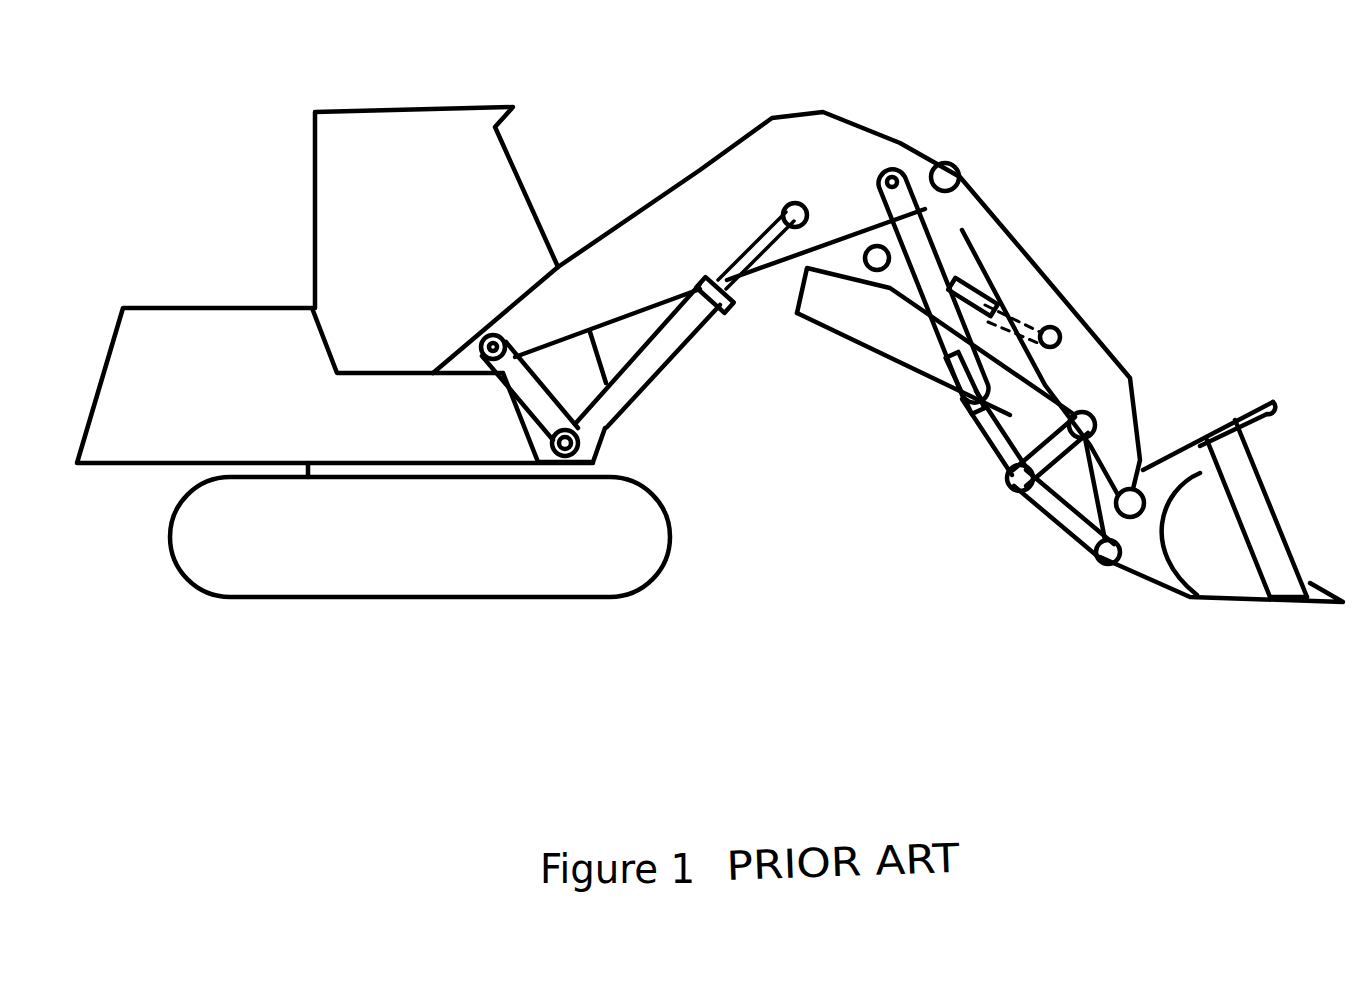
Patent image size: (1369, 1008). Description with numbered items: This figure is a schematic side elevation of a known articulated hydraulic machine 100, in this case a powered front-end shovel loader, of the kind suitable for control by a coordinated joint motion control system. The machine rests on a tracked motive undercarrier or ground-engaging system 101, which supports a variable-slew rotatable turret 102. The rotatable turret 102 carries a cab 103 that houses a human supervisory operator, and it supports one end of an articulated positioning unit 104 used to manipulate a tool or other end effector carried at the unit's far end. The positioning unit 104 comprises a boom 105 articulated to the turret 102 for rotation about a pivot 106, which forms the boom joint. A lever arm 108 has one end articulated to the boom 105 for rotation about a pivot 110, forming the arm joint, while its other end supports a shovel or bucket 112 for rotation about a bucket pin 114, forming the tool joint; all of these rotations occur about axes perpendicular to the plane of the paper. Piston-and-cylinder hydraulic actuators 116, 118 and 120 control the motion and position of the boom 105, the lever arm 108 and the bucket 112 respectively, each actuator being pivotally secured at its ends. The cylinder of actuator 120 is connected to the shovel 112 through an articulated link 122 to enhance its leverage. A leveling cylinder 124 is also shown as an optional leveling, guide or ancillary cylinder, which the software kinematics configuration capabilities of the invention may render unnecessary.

The machine 100 is at (843, 538).
The ground-engaging system 101 is at (460, 573).
The rotatable turret 102 is at (268, 310).
The cab 103 is at (396, 157).
The positioning unit 104 is at (797, 264).
The boom 105 is at (675, 206).
The pivot 106 is at (487, 335).
The lever arm 108 is at (1045, 290).
The pivot 110 is at (947, 168).
The shovel or bucket 112 is at (1247, 407).
The bucket pin 114 is at (1143, 463).
The hydraulic actuator 116 is at (677, 340).
The hydraulic actuator 118 is at (837, 327).
The hydraulic actuator 120 is at (960, 232).
The articulated link 122 is at (1057, 510).
The leveling cylinder 124 is at (905, 287).